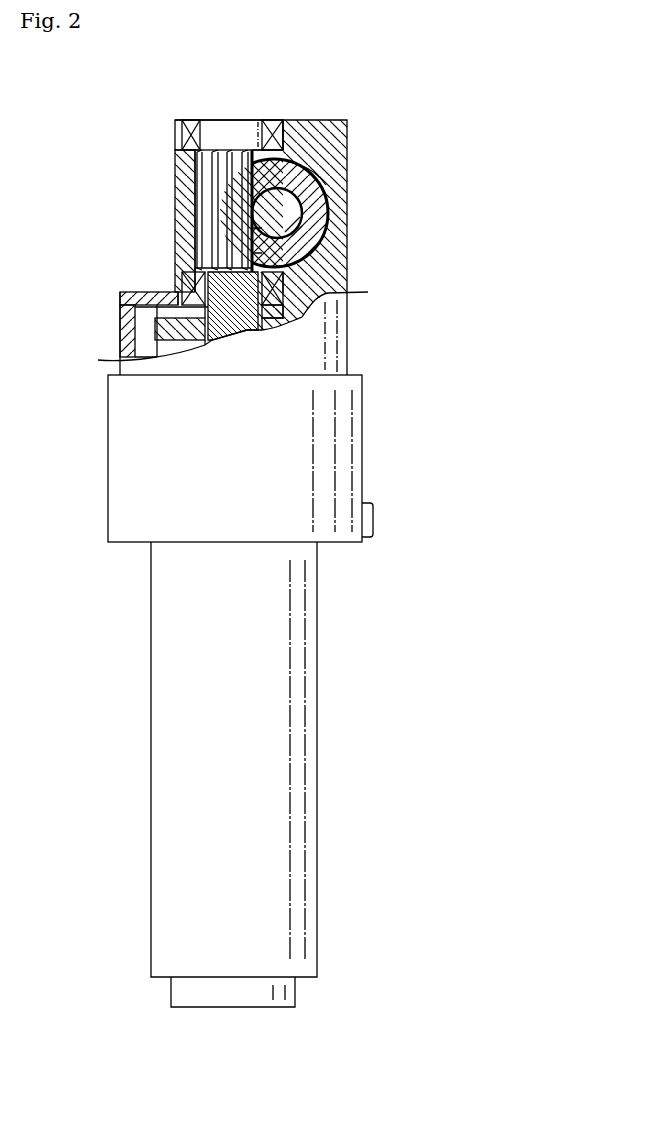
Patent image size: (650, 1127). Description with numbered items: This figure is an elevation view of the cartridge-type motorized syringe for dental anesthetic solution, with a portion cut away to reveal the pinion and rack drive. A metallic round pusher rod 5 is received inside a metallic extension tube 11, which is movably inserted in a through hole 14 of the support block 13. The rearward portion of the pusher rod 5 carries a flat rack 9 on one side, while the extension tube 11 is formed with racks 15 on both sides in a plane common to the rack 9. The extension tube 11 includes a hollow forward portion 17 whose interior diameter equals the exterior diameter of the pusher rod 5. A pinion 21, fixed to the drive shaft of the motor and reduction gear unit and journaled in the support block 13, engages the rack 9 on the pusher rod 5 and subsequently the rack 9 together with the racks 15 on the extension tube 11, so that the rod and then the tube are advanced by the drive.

The pusher rod 5 is at (305, 215).
The rack 9 is at (250, 212).
The extension tube 11 is at (316, 176).
The support block 13 is at (313, 143).
The through hole 14 is at (327, 188).
The racks 15 is at (252, 175).
The hollow forward portion 17 is at (252, 247).
The pinion 21 is at (243, 190).